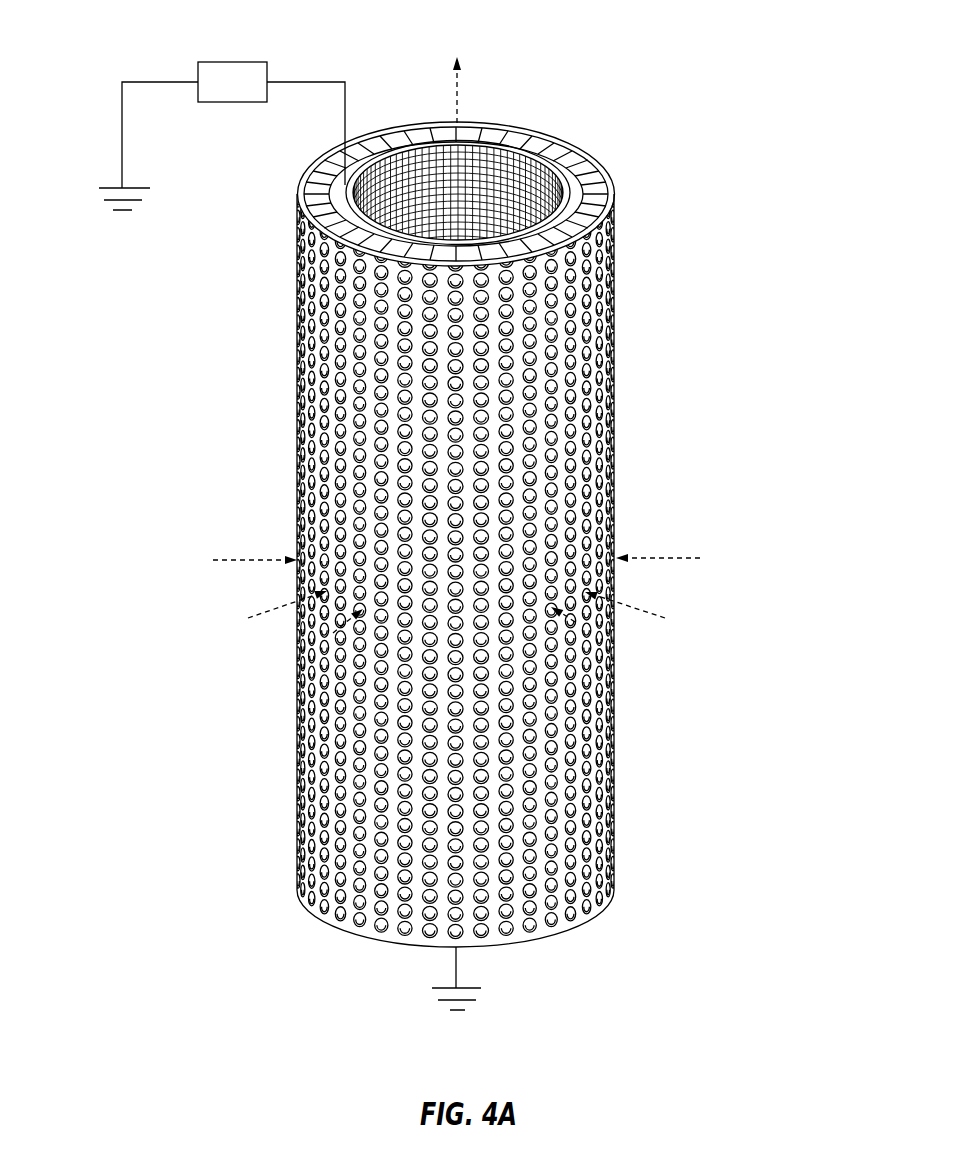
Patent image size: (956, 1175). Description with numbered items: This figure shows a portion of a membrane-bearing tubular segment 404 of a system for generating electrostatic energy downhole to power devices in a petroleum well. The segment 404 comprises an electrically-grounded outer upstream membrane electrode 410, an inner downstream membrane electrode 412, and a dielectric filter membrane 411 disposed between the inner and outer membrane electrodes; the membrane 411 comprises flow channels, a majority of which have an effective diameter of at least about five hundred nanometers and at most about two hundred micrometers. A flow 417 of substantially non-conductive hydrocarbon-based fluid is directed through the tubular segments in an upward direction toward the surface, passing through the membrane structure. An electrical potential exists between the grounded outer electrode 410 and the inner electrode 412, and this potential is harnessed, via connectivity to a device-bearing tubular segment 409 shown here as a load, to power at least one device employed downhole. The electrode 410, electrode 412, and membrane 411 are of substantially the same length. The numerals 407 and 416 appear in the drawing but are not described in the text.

The membrane-bearing tubular segment 404 is at (648, 342).
The electrical lead 407 is at (170, 82).
The device-bearing tubular segment 409 is at (233, 103).
The electrically-grounded outer upstream membrane electrode 410 is at (612, 440).
The dielectric filter membrane 411 is at (573, 238).
The inner downstream membrane electrode 412 is at (493, 187).
The ground 416 is at (490, 1000).
The flow 417 is at (460, 101).